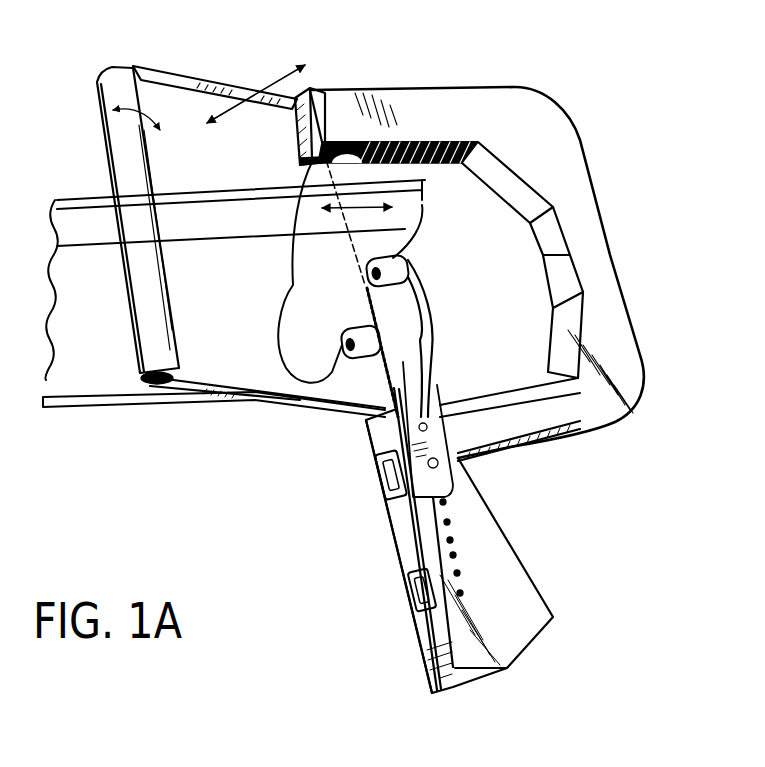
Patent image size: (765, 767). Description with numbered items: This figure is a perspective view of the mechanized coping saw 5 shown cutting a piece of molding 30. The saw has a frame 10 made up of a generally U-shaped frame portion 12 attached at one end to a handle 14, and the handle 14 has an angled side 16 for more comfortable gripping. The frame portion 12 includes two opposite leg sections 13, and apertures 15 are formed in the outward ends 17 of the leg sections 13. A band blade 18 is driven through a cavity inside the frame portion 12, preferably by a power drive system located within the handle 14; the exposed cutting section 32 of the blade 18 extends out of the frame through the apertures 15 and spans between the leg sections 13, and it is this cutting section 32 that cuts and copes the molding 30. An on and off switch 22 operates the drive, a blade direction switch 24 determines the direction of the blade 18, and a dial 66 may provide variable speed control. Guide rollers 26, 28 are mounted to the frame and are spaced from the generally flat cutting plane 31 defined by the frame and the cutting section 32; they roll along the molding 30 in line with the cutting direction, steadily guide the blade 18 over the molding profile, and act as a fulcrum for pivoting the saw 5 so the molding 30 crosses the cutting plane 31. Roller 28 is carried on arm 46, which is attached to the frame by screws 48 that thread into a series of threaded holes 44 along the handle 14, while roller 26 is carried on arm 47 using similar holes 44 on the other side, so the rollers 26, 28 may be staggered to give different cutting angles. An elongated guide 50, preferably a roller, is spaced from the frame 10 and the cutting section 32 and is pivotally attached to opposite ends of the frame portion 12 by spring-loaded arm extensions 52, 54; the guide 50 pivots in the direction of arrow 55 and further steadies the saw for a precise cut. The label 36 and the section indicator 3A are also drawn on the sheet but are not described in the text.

The frame 10 is at (583, 528).
The U-shaped frame portion 12 is at (613, 231).
The leg sections 13 is at (405, 95).
The handle 14 is at (512, 543).
The apertures 15 is at (400, 141).
The angled side 16 is at (490, 507).
The outward ends 17 is at (305, 140).
The band blade 18 is at (367, 294).
The on and off switch 22 is at (385, 493).
The blade direction switch 24 is at (412, 590).
The guide roller 26 is at (340, 343).
The guide roller 28 is at (393, 258).
The piece of molding 30 is at (83, 412).
The cutting plane 31 is at (365, 199).
The exposed cutting section 32 is at (332, 271).
The support member 36 is at (97, 308).
The section line 3A is at (420, 215).
The threaded holes 44 is at (463, 593).
The arm 46 is at (432, 327).
The arm 47 is at (398, 372).
The screws 48 is at (437, 457).
The coping saw 5 is at (268, 508).
The elongated guide 50 is at (150, 66).
The arm extension 52 is at (205, 80).
The arm extension 54 is at (258, 403).
The arrow 55 is at (275, 68).
The dial 66 is at (385, 468).